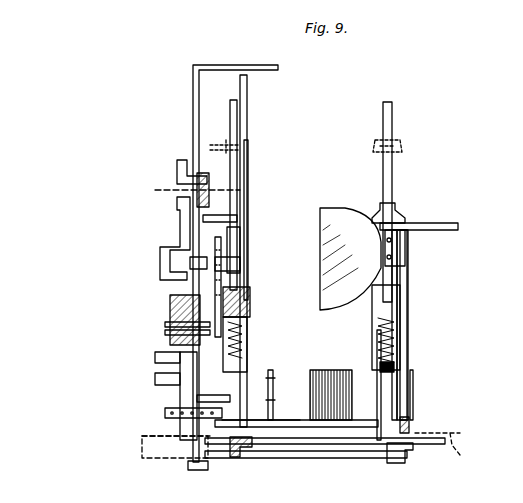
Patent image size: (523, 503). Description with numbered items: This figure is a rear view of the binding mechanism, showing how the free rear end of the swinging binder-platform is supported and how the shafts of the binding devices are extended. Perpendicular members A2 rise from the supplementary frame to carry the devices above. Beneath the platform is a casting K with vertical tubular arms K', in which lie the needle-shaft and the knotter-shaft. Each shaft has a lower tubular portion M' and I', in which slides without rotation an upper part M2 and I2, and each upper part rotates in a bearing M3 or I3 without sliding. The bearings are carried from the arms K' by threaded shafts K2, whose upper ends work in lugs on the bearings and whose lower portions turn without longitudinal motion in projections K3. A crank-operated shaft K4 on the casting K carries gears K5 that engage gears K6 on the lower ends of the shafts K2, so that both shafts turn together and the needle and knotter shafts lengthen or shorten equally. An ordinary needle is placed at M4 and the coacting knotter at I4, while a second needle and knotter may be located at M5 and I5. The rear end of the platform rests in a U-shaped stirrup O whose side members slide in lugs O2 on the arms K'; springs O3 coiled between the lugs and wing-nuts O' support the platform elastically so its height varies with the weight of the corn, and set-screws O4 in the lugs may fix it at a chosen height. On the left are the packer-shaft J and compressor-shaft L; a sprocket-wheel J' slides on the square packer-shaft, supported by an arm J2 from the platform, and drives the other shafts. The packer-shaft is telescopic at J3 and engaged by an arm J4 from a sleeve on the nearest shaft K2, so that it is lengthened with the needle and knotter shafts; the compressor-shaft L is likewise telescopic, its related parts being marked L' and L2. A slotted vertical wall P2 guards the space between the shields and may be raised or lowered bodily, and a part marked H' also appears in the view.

The perpendicular member A2 is at (247, 98).
The upper part of needle-shaft M2 is at (237, 110).
The vertical wall P2 is at (250, 175).
The second needle location M5 is at (208, 148).
The needle location M4 is at (238, 218).
The bearing of needle-shaft M3 is at (240, 238).
The bearing of knotter-shaft I3 is at (222, 270).
The lower tubular portion of needle-shaft M' is at (255, 291).
The wing-nut O' is at (311, 328).
The spring O3 is at (245, 336).
The lug O2 is at (245, 352).
The set-screw O4 is at (380, 367).
The stirrup O is at (379, 390).
The upper part of knotter-shaft I2 is at (392, 118).
The second knotter location I5 is at (402, 148).
The knotter location I4 is at (375, 212).
The lower tubular portion of knotter-shaft I' is at (411, 325).
The threaded shaft K2 is at (408, 362).
The vertical tubular arm K' is at (354, 385).
The post H' is at (282, 395).
The casting K is at (325, 427).
The crank-operated shaft K4 is at (340, 458).
The gear on crank-operated shaft K5 is at (255, 455).
The projection K3 is at (188, 465).
The gear on threaded shaft K6 is at (235, 455).
The telescopic portion of packer-shaft J3 is at (170, 310).
The arm J4 is at (165, 326).
The bracket L2 is at (155, 357).
The bar L' is at (150, 396).
The compressor-shaft L is at (155, 385).
The packer-shaft J is at (189, 399).
The sprocket-wheel J' is at (199, 413).
The arm J2 is at (142, 440).